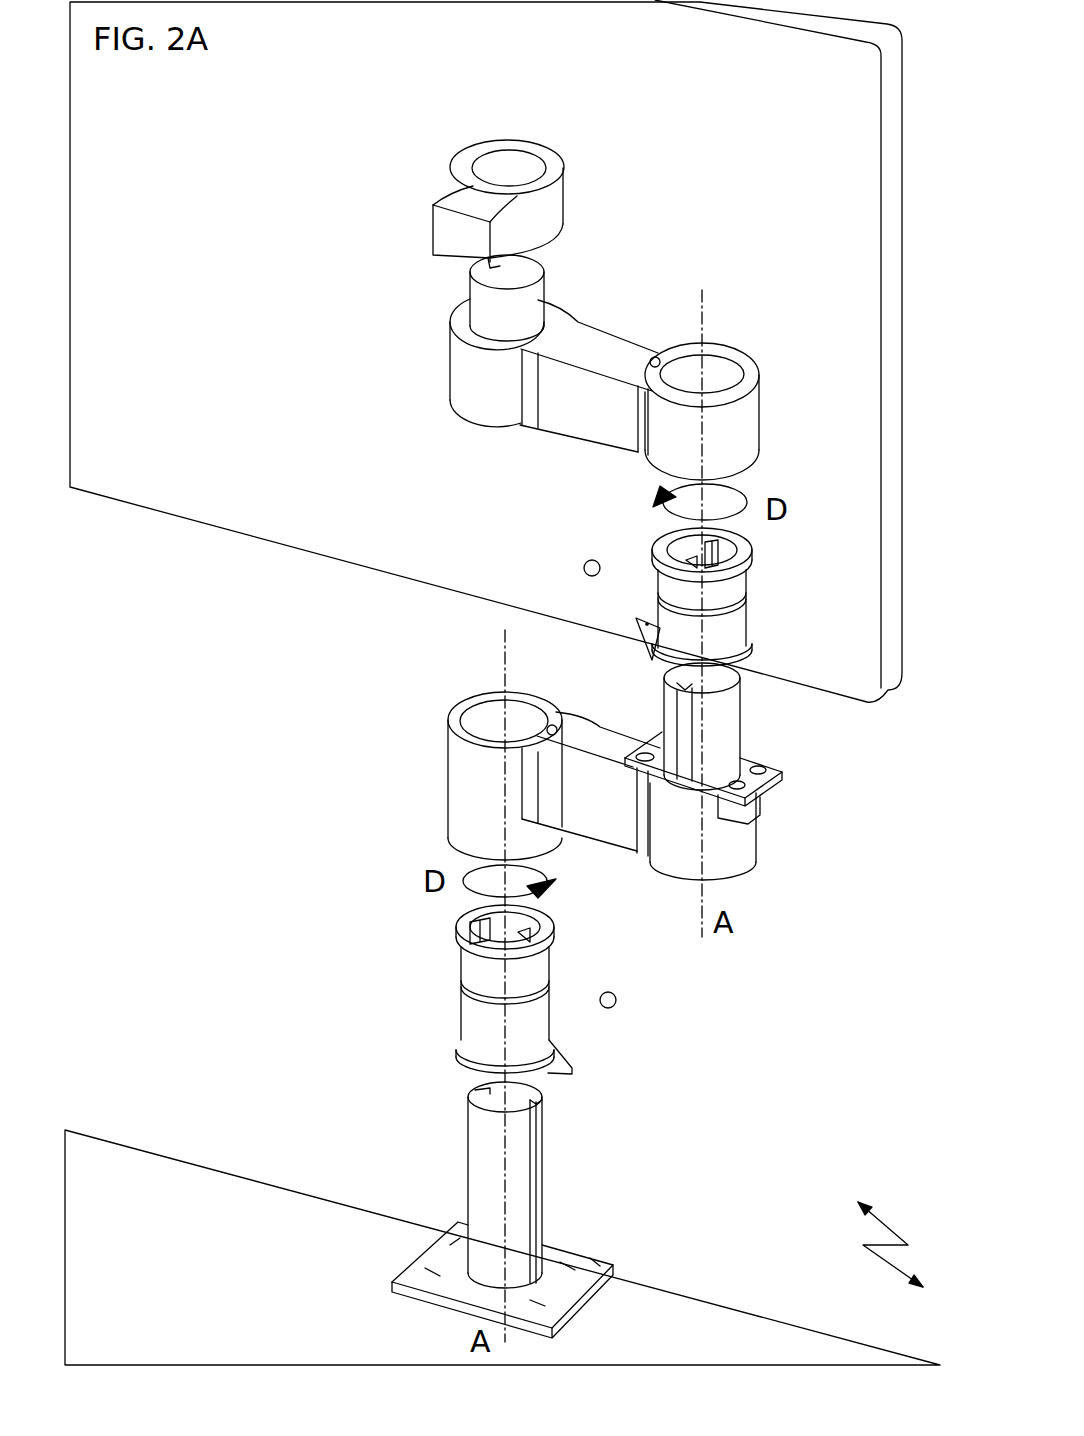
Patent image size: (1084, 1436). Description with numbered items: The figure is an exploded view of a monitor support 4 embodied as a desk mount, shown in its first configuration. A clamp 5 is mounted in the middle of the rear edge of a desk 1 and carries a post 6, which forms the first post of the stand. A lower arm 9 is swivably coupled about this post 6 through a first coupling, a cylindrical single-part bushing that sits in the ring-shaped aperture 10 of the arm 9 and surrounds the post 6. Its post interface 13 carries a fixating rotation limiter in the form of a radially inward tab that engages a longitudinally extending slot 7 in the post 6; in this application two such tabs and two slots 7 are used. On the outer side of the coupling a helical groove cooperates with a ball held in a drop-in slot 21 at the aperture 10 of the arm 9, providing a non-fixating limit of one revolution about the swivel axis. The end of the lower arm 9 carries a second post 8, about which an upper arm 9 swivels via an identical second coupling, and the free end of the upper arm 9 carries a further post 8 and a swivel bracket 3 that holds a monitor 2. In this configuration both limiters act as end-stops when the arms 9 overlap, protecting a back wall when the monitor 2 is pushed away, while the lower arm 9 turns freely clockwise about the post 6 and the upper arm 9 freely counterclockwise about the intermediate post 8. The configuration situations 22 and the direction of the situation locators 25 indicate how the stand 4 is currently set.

The desk 1 is at (178, 1238).
The monitor 2 is at (290, 487).
The swivel bracket 3 is at (468, 190).
The monitor support 4 is at (900, 1250).
The clamp 5 is at (555, 1257).
The post 6 is at (513, 1212).
The slot 7 is at (685, 733).
The second post 8 is at (508, 310).
The arm 9 is at (585, 397).
The aperture 10 is at (718, 370).
The post interface 13 is at (733, 553).
The drop-in slot 21 is at (655, 362).
The configuration situations 22 is at (767, 770).
The situation locator 25 is at (648, 623).